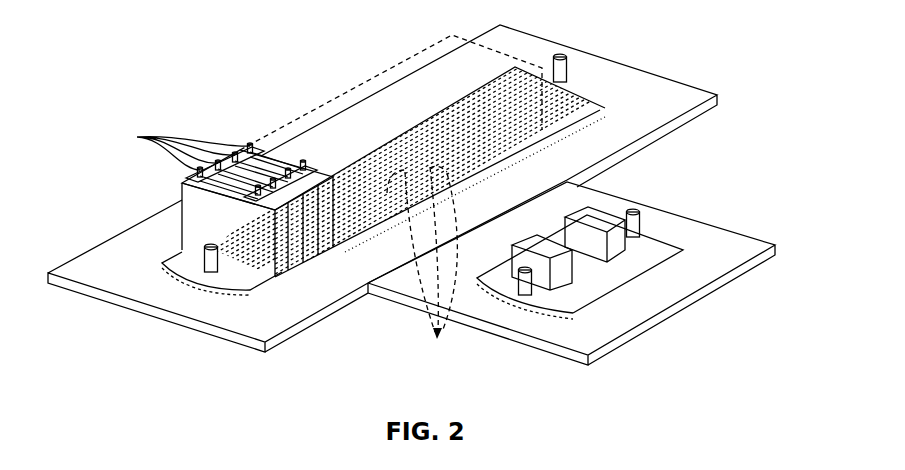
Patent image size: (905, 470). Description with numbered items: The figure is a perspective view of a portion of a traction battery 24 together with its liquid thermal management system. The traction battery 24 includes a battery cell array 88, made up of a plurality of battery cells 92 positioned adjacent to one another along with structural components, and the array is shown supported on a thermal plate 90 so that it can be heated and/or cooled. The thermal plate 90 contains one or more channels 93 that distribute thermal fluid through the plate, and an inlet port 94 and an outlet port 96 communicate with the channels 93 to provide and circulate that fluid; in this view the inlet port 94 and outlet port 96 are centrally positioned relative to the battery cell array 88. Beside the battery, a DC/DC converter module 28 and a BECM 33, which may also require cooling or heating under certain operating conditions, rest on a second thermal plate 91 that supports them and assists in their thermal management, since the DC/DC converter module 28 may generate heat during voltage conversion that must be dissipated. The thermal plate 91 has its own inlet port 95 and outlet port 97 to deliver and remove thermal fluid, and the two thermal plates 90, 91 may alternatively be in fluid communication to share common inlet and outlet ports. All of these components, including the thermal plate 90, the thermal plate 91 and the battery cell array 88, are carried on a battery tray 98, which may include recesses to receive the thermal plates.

The traction battery 24 is at (296, 94).
The battery cell array 88 is at (396, 62).
The battery cells 92 is at (208, 163).
The battery tray 98 is at (688, 93).
The inlet port 94 is at (565, 78).
The inlet port 95 is at (633, 208).
The BECM 33 is at (583, 212).
The DC/DC converter module 28 is at (532, 242).
The outlet port 97 is at (517, 277).
The thermal plate 91 is at (597, 280).
The channels 93 is at (422, 266).
The thermal plate 90 is at (250, 280).
The outlet port 96 is at (217, 268).